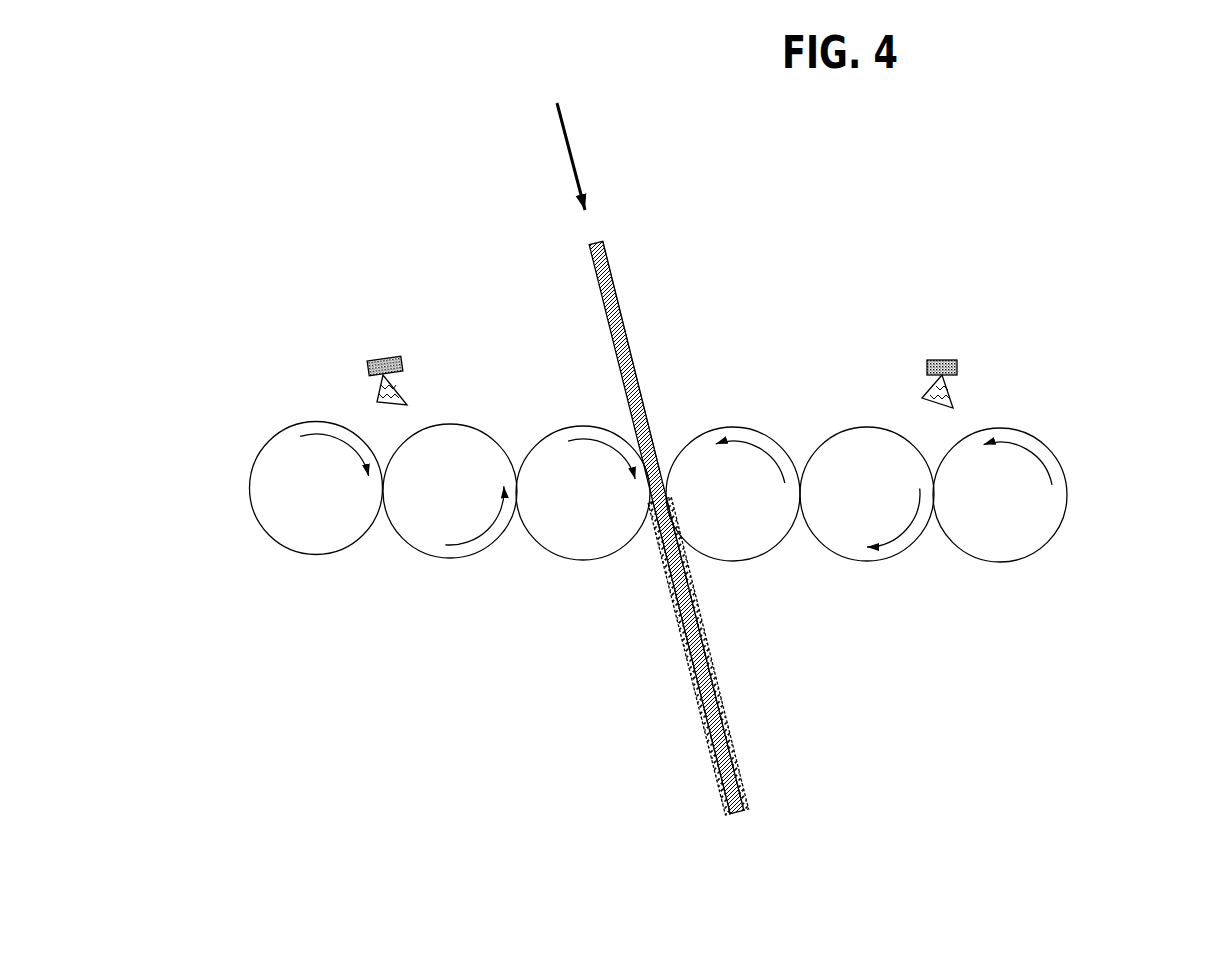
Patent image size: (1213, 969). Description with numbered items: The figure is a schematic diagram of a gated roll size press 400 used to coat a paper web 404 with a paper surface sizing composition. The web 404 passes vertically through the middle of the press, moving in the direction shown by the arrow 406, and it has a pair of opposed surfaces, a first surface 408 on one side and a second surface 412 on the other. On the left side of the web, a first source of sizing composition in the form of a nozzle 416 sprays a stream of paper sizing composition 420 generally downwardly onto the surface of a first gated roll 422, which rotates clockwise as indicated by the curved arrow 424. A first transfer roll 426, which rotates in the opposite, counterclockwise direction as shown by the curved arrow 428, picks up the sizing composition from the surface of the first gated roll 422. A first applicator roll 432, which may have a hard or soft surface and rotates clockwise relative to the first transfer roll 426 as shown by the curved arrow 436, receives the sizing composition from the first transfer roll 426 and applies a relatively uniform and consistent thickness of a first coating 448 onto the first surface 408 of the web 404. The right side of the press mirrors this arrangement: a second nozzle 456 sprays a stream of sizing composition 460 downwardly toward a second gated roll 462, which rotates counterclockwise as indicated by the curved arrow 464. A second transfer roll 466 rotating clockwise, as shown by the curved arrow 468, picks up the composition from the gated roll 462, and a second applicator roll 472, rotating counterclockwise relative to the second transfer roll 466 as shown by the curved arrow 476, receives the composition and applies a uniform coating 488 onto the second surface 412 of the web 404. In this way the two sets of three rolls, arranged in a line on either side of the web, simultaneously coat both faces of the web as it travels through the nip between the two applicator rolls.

The gated roll size press 400 is at (438, 723).
The paper web 404 is at (758, 333).
The arrow 406 is at (575, 160).
The first surface 408 is at (595, 280).
The second surface 412 is at (617, 300).
The nozzle 416 is at (383, 362).
The stream of paper sizing composition 420 is at (378, 390).
The first gated roll 422 is at (242, 512).
The curved arrow 424 is at (340, 443).
The first transfer roll 426 is at (467, 415).
The curved arrow 428 is at (463, 543).
The first applicator roll 432 is at (580, 568).
The curved arrow 436 is at (613, 447).
The first coating of sizing composition 448 is at (703, 732).
The nozzle 456 is at (945, 362).
The stream of paper sizing composition 460 is at (948, 385).
The second gated roll 462 is at (1087, 482).
The curved arrow 464 is at (1023, 453).
The second transfer roll 466 is at (825, 423).
The curved arrow 468 is at (910, 520).
The second applicator roll 472 is at (778, 563).
The curved arrow 476 is at (747, 445).
The second coating of sizing composition 488 is at (740, 763).